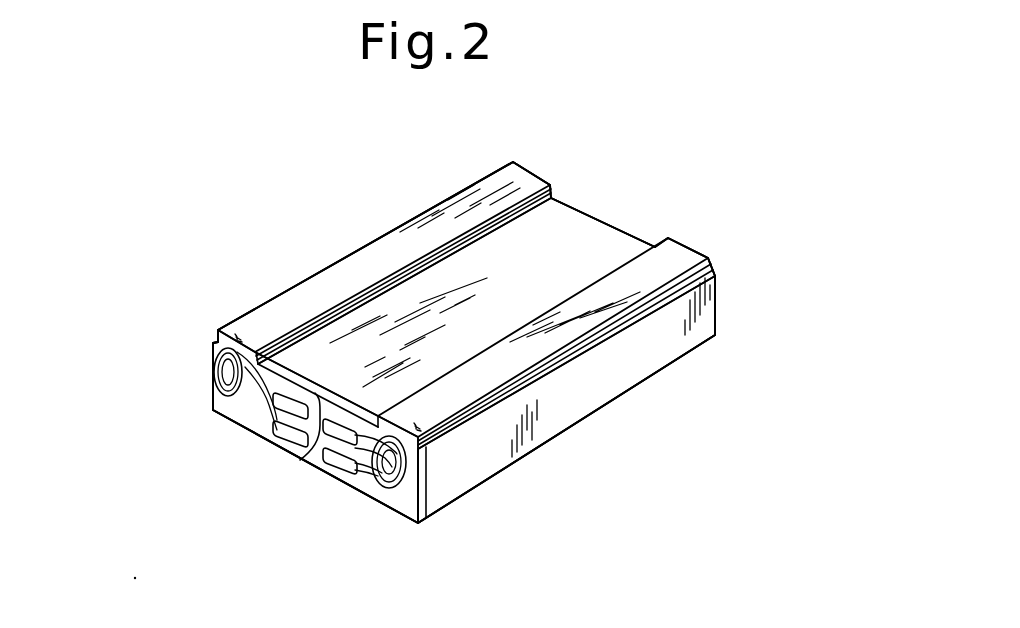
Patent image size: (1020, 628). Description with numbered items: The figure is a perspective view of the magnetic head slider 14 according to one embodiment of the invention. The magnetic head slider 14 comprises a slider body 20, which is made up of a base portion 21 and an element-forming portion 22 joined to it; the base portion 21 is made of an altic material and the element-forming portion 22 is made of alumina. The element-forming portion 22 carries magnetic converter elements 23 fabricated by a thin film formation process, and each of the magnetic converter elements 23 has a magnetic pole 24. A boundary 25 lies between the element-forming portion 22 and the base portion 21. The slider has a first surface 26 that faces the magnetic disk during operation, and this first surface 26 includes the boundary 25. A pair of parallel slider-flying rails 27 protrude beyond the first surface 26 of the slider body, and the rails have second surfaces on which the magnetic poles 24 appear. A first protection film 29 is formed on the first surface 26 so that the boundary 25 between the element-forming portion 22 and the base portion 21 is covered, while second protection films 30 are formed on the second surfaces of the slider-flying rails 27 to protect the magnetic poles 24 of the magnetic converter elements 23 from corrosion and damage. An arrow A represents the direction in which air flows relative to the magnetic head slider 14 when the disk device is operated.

The magnetic head slider 14 is at (357, 213).
The slider body 20 is at (553, 206).
The base portion 21 is at (573, 403).
The element-forming portion 22 is at (418, 522).
The magnetic converter elements 23 is at (216, 392).
The magnetic pole 24 is at (232, 322).
The boundary 25 is at (428, 470).
The first surface 26 is at (300, 462).
The slider-flying rails 27 is at (305, 335).
The first protection film 29 is at (575, 243).
The second protection films 30 is at (314, 297).
The arrow A is at (659, 158).